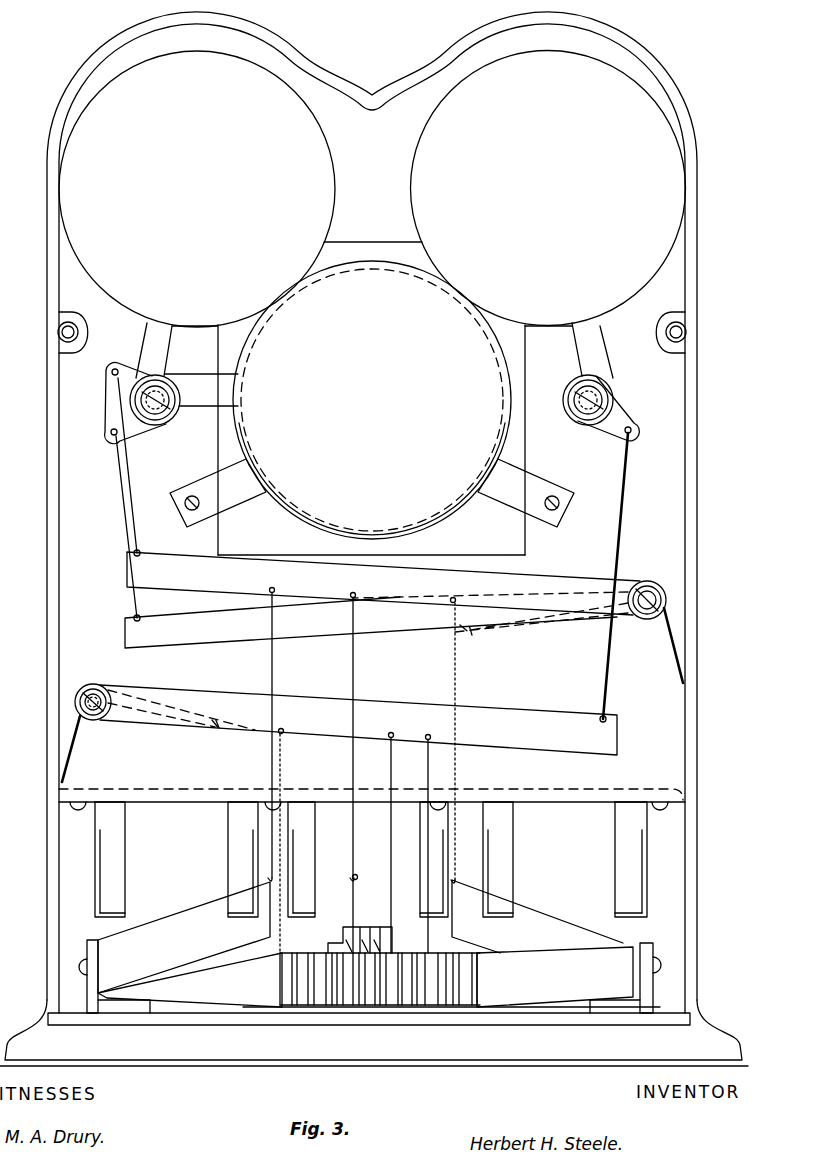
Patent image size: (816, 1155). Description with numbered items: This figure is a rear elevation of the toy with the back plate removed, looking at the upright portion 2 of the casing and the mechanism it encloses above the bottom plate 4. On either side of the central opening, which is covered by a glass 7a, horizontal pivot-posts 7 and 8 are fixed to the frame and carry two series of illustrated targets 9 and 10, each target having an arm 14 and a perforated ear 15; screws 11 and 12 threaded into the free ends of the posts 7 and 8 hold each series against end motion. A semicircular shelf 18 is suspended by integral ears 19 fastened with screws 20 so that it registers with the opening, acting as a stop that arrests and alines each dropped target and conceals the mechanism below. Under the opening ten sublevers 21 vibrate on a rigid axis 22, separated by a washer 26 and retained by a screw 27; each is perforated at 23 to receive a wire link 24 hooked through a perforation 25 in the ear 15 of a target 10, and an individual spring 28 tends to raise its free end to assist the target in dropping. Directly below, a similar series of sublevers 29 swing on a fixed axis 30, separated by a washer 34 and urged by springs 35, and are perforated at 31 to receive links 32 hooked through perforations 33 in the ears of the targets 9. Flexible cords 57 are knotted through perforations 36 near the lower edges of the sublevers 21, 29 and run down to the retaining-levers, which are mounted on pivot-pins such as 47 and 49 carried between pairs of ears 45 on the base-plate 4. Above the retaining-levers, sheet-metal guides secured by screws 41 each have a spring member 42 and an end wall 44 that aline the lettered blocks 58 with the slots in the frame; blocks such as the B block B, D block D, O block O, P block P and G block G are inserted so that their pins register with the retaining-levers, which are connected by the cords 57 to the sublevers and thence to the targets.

The upright portion 2 is at (372, 512).
The bottom plate 4 is at (192, 1024).
The pivot-post 7 is at (565, 388).
The glass 7a is at (372, 398).
The pivot-post 8 is at (168, 419).
The series of illustrated targets 9 is at (548, 188).
The series of illustrated targets 10 is at (197, 189).
The screw 11 is at (575, 403).
The screw 12 is at (162, 388).
The arm 14 is at (612, 340).
The perforated ear 15 is at (119, 367).
The semicircular shelf 18 is at (472, 500).
The integral ears 19 is at (372, 493).
The screws 20 is at (192, 496).
The sublevers 21 is at (382, 600).
The rigid axis 22 is at (658, 586).
The perforation 23 is at (141, 551).
The wire link 24 is at (128, 490).
The perforation 25 is at (108, 386).
The washer 26 is at (646, 618).
The screw 27 is at (646, 580).
The spring 28 is at (674, 643).
The sublevers 29 is at (358, 720).
The fixed axis 30 is at (93, 690).
The perforation 31 is at (607, 717).
The link 32 is at (611, 657).
The perforation 33 is at (634, 428).
The washer 34 is at (90, 719).
The spring 35 is at (66, 770).
The perforations 36 is at (276, 590).
The screws 41 is at (77, 810).
The spring member 42 is at (119, 866).
The end wall 44 is at (97, 881).
The ears 45 is at (88, 990).
The pivot-pin 47 is at (657, 962).
The pivot-pin 49 is at (80, 960).
The flexible cord 57 is at (455, 666).
The blocks 58 is at (375, 839).
The G block G is at (184, 937).
The D block D is at (537, 916).
The P block P is at (190, 980).
The B block B is at (555, 977).
The O block O is at (356, 893).